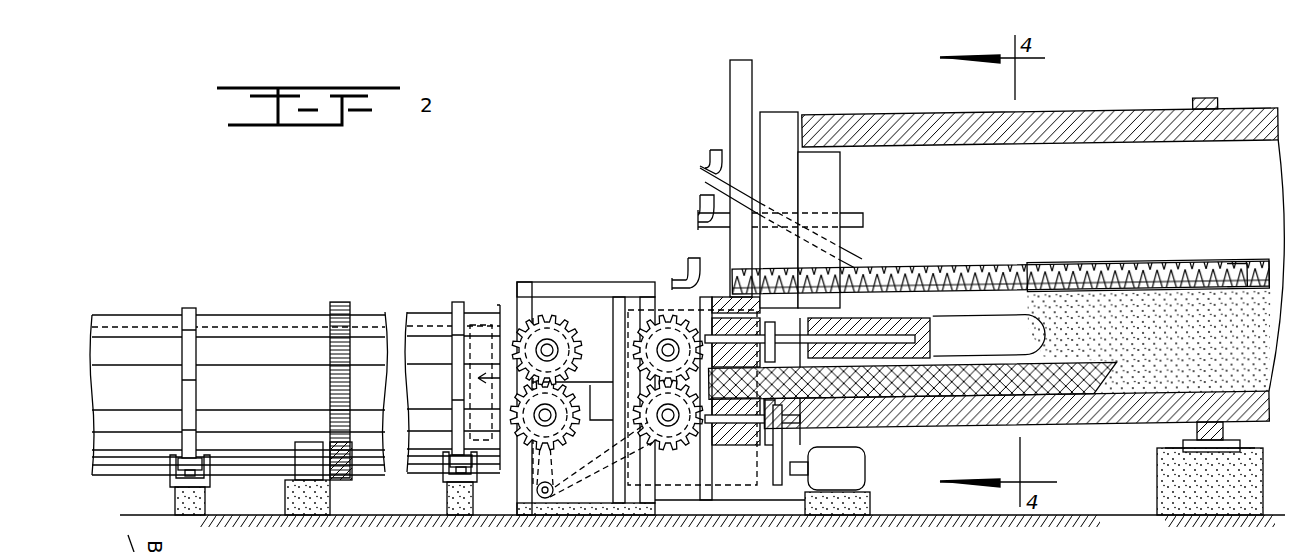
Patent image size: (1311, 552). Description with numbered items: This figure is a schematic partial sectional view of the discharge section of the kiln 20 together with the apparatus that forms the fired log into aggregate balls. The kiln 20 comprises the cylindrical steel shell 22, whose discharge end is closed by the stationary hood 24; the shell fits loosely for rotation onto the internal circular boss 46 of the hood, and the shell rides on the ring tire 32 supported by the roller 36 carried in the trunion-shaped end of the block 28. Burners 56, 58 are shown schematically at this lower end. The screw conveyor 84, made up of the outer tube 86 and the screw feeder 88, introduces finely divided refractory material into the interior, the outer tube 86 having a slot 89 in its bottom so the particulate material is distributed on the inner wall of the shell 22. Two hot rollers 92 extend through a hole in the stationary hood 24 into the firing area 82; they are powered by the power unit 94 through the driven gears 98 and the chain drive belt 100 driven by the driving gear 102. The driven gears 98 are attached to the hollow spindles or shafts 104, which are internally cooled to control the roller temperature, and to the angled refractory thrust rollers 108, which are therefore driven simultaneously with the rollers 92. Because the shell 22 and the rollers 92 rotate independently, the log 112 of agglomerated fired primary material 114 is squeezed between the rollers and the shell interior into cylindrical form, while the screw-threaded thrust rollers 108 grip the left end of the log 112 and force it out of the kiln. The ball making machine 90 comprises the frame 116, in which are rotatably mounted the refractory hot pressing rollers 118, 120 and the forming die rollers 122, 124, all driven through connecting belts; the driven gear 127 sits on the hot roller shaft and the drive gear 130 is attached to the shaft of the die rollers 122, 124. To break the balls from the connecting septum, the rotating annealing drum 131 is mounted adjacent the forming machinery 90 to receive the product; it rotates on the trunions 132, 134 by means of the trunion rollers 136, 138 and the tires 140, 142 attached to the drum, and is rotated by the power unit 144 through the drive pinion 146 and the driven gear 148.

The kiln 20 is at (1072, 108).
The cylindrical steel shell 22 is at (1130, 115).
The stationary hood 24 is at (795, 112).
The block 28 is at (1157, 480).
The ring tire 32 is at (1213, 104).
The roller 36 is at (1240, 448).
The internal circular boss 46 is at (840, 180).
The burner 56 is at (862, 218).
The burner 58 is at (862, 252).
The firing area 82 is at (1095, 184).
The screw conveyor 84 is at (1053, 270).
The outer tube 86 is at (1120, 266).
The screw feeder 88 is at (1180, 272).
The slot 89 is at (1250, 290).
The forming equipment 90 is at (572, 300).
The hot rollers 92 is at (970, 320).
The power unit 94 is at (865, 470).
The driven gears 98 is at (780, 330).
The chain drive belt 100 is at (730, 407).
The driving gear 102 is at (771, 462).
The hollow spindles or shafts 104 is at (870, 325).
The refractory thrust rollers 108 is at (728, 318).
The log 112 is at (965, 400).
The fired primary material 114 is at (1232, 352).
The frame 116 is at (595, 282).
The refractory hot pressing roller 118 is at (665, 305).
The refractory hot pressing roller 120 is at (672, 450).
The forming die roller 122 is at (540, 318).
The forming die roller 124 is at (570, 450).
The driven gear 127 is at (645, 410).
The drive gear 130 is at (560, 330).
The annealing drum 131 is at (266, 302).
The trunion 132 is at (170, 480).
The trunion 134 is at (446, 482).
The trunion roller 136 is at (200, 456).
The trunion roller 138 is at (448, 468).
The tire 140 is at (192, 308).
The tire 142 is at (462, 302).
The power unit 144 is at (297, 470).
The drive pinion 146 is at (343, 478).
The driven gear 148 is at (338, 302).